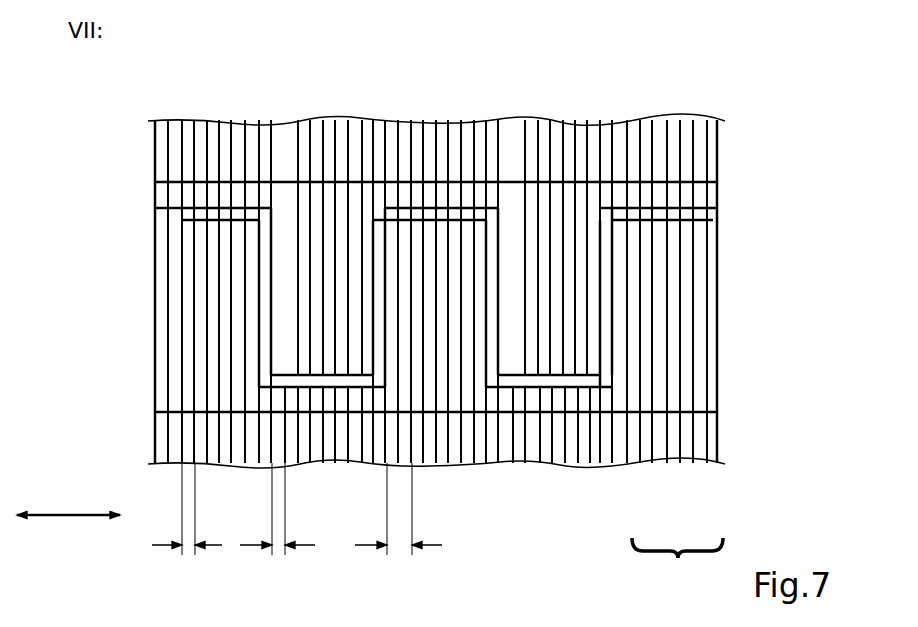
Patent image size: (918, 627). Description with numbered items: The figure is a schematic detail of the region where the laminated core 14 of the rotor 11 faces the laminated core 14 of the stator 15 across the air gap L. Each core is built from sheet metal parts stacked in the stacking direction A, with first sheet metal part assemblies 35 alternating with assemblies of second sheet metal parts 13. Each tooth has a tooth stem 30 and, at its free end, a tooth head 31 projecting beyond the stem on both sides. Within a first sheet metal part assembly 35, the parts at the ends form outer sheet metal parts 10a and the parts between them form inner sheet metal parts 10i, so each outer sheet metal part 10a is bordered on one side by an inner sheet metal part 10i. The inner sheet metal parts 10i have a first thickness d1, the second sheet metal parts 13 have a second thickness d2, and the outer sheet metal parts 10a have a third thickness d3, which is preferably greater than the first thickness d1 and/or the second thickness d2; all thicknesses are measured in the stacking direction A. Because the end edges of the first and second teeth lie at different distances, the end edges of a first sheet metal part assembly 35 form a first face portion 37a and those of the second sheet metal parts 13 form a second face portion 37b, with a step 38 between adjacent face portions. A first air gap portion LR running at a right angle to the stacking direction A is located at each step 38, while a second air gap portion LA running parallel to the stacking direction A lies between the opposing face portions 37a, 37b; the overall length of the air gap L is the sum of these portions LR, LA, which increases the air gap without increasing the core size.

The outer sheet metal part 10a is at (242, 370).
The inner sheet metal part 10i is at (212, 298).
The rotor 11 is at (733, 170).
The second sheet metal part 13 is at (183, 137).
The laminated core 14 is at (435, 120).
The stator 15 is at (731, 342).
The tooth stem 30 is at (282, 135).
The tooth head 31 is at (585, 200).
The first sheet metal part assembly 35 is at (672, 567).
The first face portion 37a is at (199, 219).
The second face portion 37b is at (353, 374).
The step 38 is at (604, 272).
The air gap L is at (721, 214).
The second air gap portion LA is at (457, 217).
The first air gap portion LR is at (608, 234).
The first thickness d1 is at (188, 547).
The second thickness d2 is at (278, 547).
The third thickness d3 is at (398, 547).
The stacking direction A is at (62, 517).